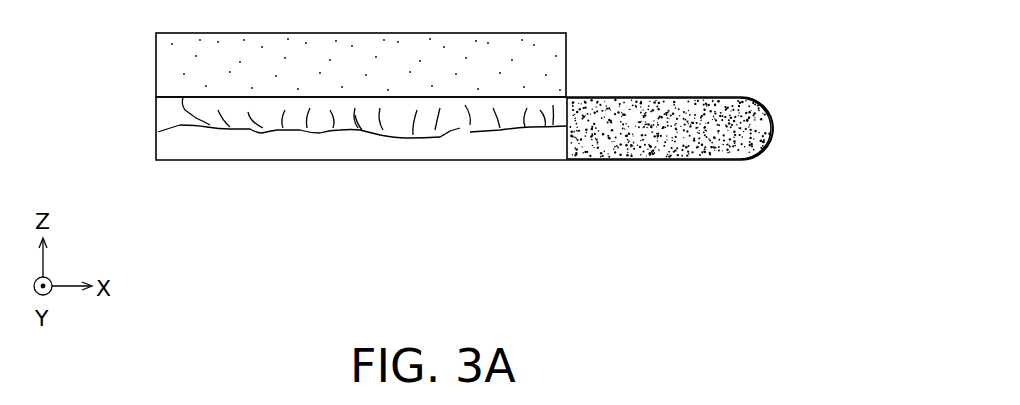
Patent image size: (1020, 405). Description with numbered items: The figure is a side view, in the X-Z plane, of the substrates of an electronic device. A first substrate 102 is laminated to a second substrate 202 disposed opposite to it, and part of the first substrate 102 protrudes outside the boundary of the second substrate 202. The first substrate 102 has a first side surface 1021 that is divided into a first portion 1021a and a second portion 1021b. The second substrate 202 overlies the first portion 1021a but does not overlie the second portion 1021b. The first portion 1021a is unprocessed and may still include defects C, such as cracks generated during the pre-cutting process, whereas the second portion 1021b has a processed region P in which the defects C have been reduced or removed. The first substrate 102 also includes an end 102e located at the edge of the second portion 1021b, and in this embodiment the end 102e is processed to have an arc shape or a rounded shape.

The first substrate 102 is at (168, 115).
The second substrate 202 is at (164, 47).
The first side surface 1021 is at (464, 181).
The first portion 1021a is at (358, 140).
The second portion 1021b is at (669, 158).
The end 102e is at (773, 118).
The processed region P is at (680, 100).
The defects C is at (183, 97).